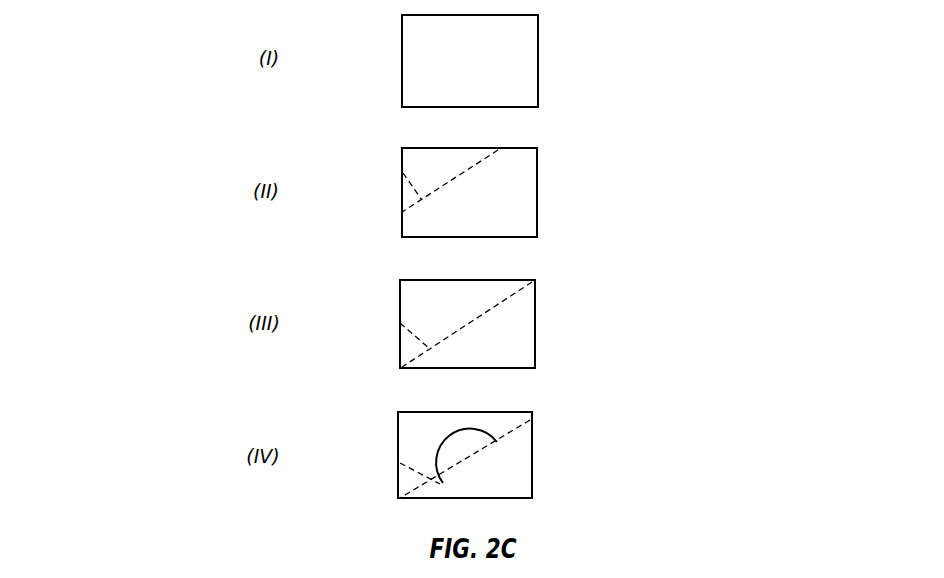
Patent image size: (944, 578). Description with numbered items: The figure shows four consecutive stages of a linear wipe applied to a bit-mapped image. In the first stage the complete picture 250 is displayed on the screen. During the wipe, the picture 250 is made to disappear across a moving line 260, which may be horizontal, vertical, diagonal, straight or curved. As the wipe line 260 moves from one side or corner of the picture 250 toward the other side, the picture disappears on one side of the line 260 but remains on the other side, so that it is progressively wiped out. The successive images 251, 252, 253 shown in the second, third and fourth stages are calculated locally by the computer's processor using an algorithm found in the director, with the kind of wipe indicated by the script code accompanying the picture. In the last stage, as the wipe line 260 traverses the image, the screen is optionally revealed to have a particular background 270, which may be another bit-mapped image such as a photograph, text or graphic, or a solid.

The picture 250 is at (402, 60).
The image 251 is at (527, 195).
The image 252 is at (525, 327).
The image 253 is at (523, 490).
The wipe line 260 is at (403, 173).
The background 270 is at (494, 430).